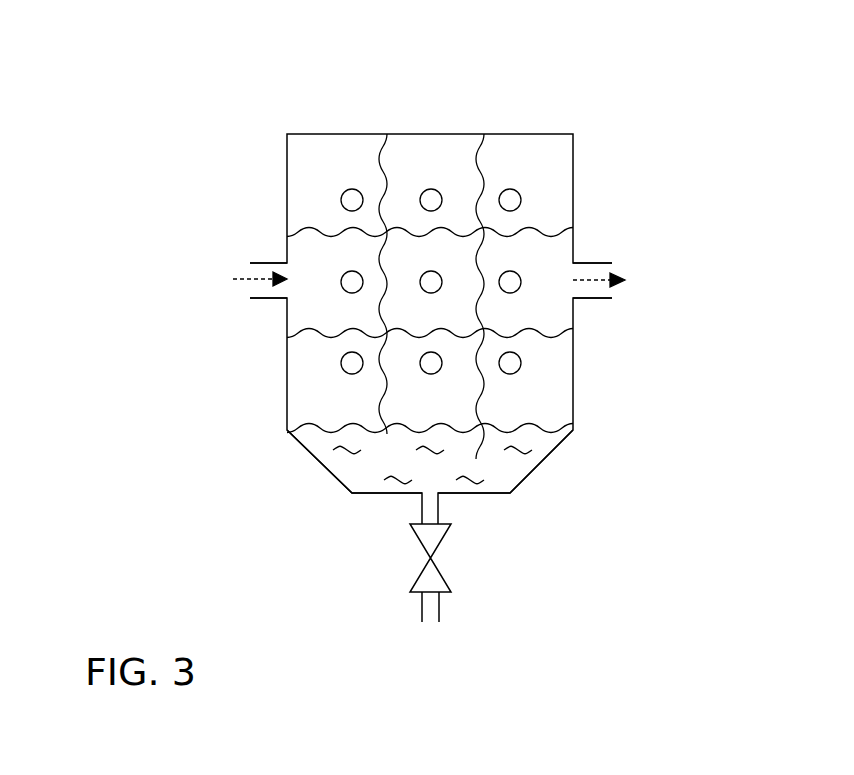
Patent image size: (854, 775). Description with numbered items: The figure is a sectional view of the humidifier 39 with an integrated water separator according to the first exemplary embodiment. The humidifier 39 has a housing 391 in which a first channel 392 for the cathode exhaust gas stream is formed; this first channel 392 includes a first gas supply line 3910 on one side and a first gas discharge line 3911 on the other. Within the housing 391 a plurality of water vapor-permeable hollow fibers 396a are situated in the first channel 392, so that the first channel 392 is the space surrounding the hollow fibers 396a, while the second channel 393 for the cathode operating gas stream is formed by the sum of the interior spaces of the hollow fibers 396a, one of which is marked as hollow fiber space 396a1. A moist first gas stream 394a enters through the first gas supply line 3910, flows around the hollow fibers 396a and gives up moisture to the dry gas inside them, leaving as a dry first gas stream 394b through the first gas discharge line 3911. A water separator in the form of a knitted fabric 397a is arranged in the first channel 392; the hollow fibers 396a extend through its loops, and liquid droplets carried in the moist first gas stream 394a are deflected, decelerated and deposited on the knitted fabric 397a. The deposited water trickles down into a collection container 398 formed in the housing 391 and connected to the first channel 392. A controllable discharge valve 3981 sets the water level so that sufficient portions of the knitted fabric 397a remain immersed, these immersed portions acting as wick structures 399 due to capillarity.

The humidifier 39 is at (226, 103).
The housing 391 is at (573, 177).
The first channel 392 is at (315, 312).
The second channel 393 is at (619, 380).
The spray hole 396a1 is at (512, 365).
The water vapor-permeable hollow fibers 396a is at (347, 191).
The knitted fabric 397a is at (482, 157).
The first gas supply line 3910 is at (263, 263).
The first gas discharge line 3911 is at (595, 263).
The moist first gas stream 394a is at (244, 279).
The dry first gas stream 394b is at (587, 280).
The collection container 398 is at (315, 455).
The wick structures 399 is at (387, 446).
The controllable discharge valve 3981 is at (436, 571).